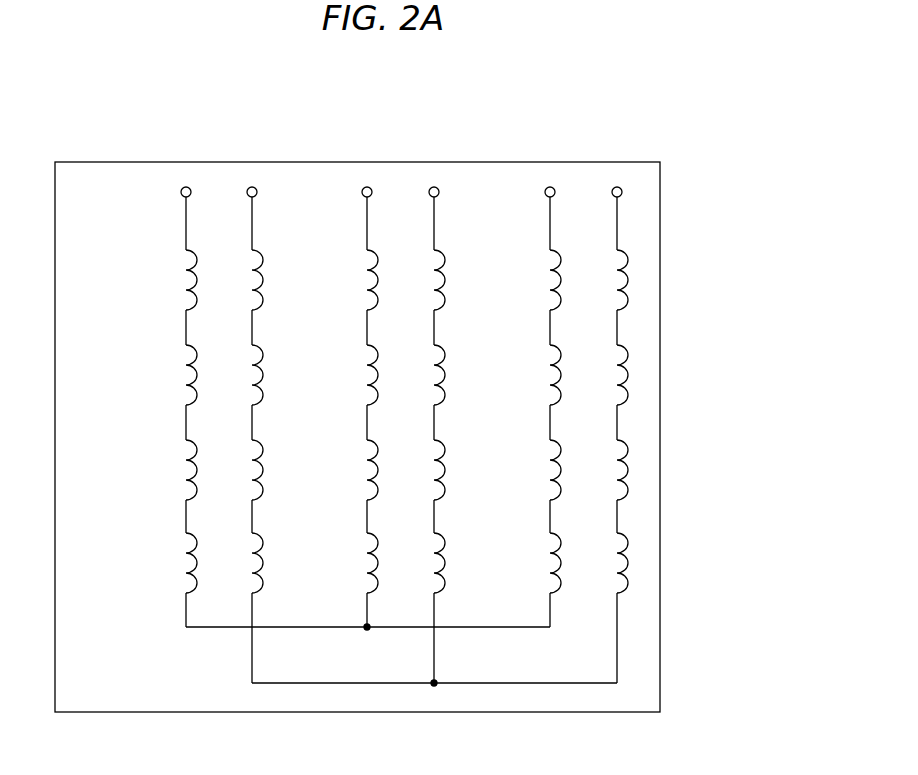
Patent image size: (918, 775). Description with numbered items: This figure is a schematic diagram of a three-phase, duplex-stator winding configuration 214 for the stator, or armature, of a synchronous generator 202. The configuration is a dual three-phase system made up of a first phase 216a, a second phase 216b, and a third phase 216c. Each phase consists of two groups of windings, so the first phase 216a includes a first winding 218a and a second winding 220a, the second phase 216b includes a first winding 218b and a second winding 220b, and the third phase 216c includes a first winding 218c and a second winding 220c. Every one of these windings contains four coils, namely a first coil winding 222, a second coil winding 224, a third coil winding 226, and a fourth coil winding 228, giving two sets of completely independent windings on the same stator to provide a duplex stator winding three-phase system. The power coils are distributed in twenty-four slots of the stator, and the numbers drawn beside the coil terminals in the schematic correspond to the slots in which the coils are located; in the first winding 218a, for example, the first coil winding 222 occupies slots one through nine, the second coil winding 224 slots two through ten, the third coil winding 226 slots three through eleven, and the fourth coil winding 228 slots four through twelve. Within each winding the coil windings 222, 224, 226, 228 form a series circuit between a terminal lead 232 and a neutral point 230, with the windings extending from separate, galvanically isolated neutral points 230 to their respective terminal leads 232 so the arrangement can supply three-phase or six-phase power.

The synchronous generator 202 is at (660, 213).
The three-phase, duplex-stator winding configuration 214 is at (459, 423).
The first phase 216a is at (229, 368).
The second phase 216b is at (402, 368).
The third phase 216c is at (591, 368).
The first winding 218a is at (191, 378).
The second winding 220a is at (268, 406).
The first winding 218b is at (362, 378).
The second winding 220b is at (441, 406).
The first winding 218c is at (551, 378).
The second winding 220c is at (630, 406).
The first coil winding 222 is at (154, 285).
The second coil winding 224 is at (154, 375).
The third coil winding 226 is at (154, 467).
The fourth coil winding 228 is at (146, 563).
The neutral point 230 is at (367, 631).
The terminal lead 232 is at (150, 189).